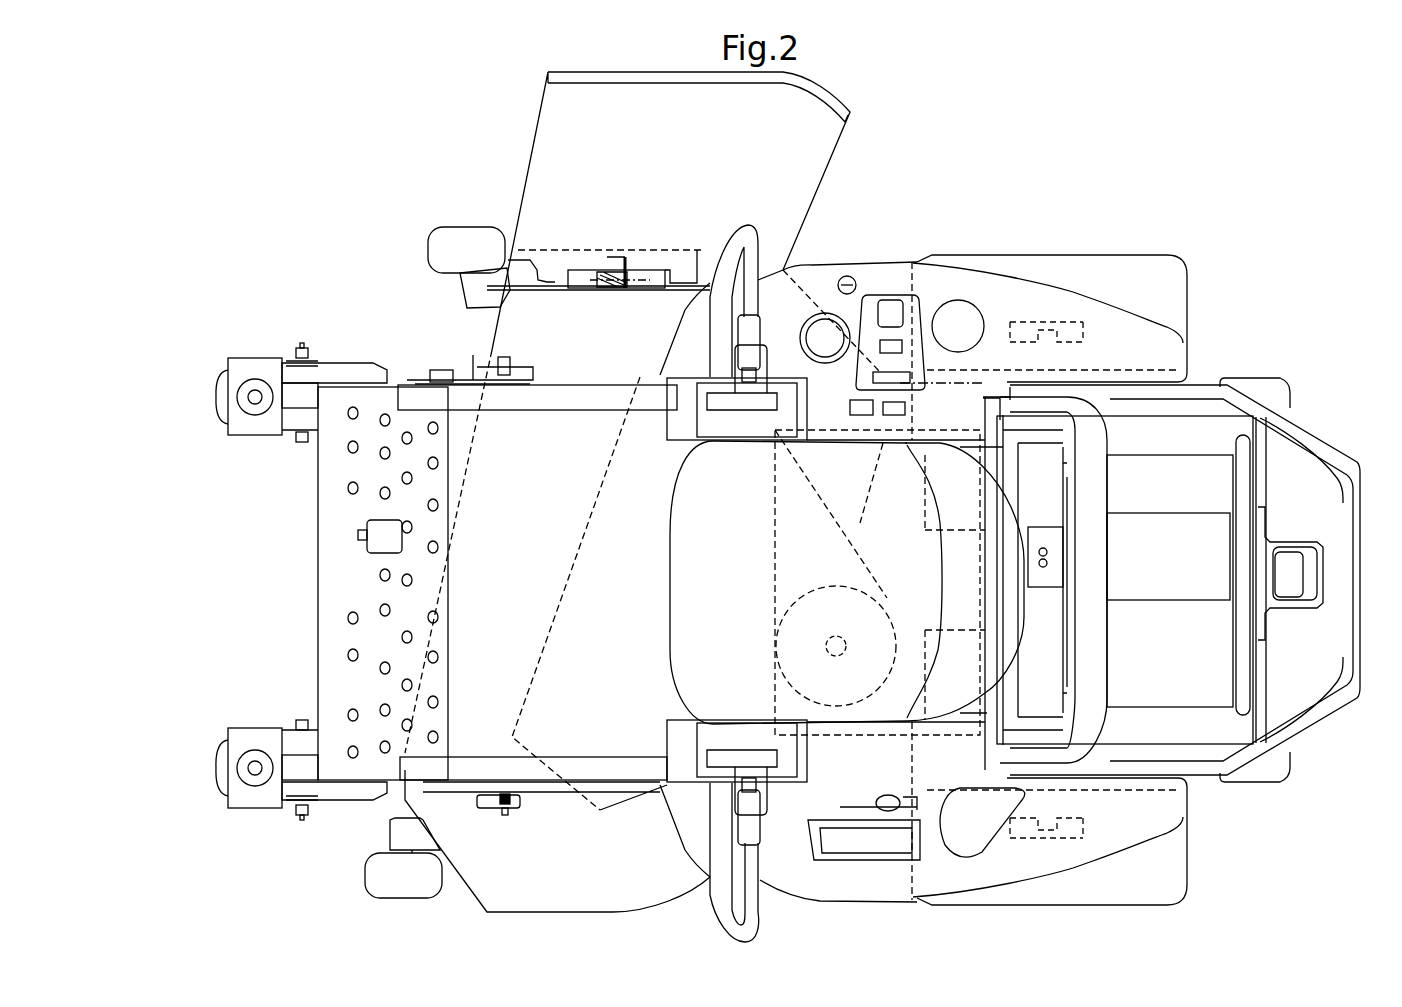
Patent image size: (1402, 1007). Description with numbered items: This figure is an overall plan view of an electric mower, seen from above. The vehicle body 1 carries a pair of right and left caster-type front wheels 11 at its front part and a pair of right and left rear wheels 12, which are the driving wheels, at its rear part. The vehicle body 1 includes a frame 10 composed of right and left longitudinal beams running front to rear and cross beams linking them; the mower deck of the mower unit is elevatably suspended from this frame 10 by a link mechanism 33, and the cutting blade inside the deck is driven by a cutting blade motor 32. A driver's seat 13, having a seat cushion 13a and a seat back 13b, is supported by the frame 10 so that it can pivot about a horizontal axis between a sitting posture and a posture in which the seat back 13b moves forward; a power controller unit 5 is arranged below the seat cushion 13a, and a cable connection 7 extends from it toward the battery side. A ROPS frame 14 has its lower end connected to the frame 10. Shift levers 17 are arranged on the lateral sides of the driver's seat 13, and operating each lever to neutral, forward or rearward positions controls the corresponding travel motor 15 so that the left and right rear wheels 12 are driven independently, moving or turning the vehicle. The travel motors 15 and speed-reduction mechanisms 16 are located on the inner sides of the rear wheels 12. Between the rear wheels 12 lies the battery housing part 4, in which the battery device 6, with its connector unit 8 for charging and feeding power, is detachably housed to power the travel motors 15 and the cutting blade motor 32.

The vehicle body 1 is at (205, 176).
The battery housing part 4 is at (1215, 372).
The power controller unit 5 is at (775, 495).
The battery device 6 is at (1198, 690).
The hood hinge 7 is at (1049, 612).
The connector unit 8 is at (1148, 523).
The frame 10 is at (573, 390).
The front wheels 11 is at (335, 372).
The rear wheels 12 is at (1100, 262).
The driver's seat 13 is at (776, 582).
The seat cushion 13a is at (687, 647).
The seat back 13b is at (943, 575).
The ROPS frame 14 is at (1053, 545).
The travel motors 15 is at (1033, 580).
The speed-reduction mechanisms 16 is at (1020, 380).
The shift levers 17 is at (737, 240).
The cutting blade motor 32 is at (792, 592).
The link mechanism 33 is at (443, 341).